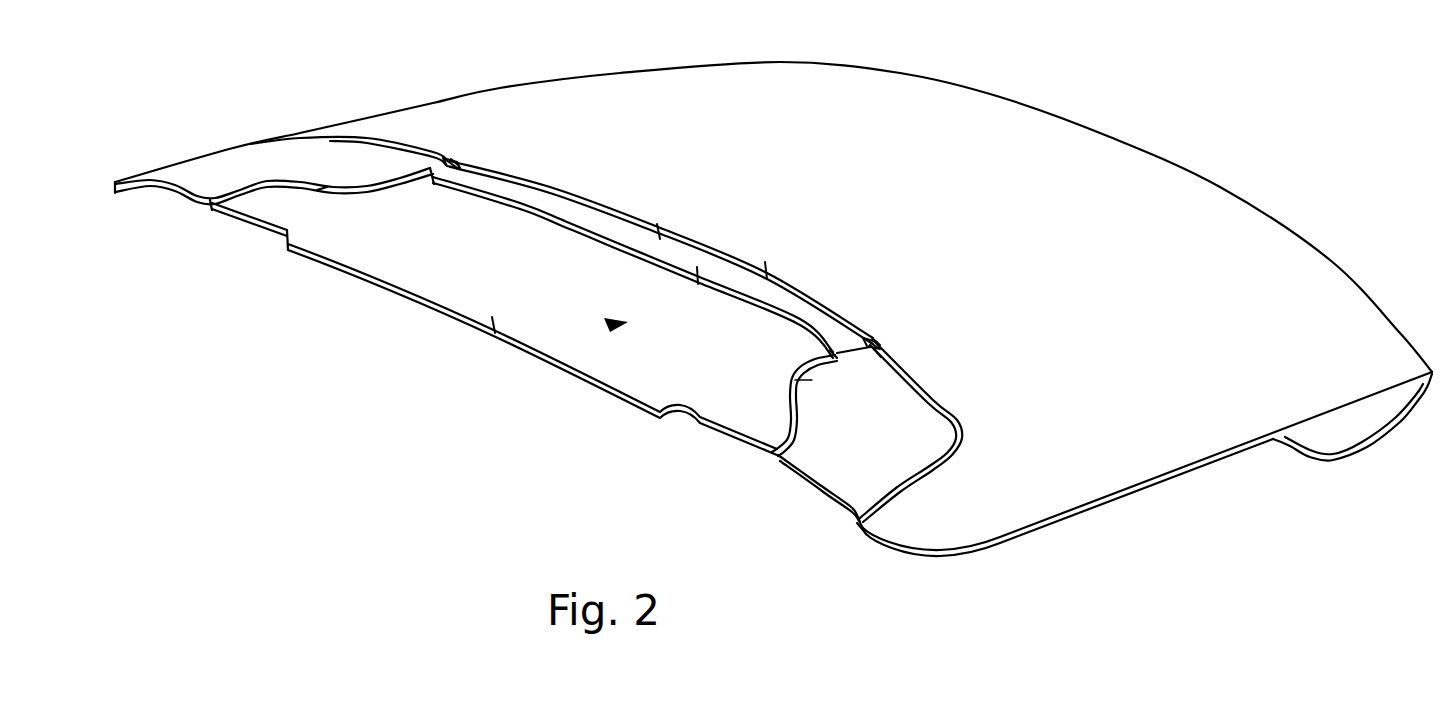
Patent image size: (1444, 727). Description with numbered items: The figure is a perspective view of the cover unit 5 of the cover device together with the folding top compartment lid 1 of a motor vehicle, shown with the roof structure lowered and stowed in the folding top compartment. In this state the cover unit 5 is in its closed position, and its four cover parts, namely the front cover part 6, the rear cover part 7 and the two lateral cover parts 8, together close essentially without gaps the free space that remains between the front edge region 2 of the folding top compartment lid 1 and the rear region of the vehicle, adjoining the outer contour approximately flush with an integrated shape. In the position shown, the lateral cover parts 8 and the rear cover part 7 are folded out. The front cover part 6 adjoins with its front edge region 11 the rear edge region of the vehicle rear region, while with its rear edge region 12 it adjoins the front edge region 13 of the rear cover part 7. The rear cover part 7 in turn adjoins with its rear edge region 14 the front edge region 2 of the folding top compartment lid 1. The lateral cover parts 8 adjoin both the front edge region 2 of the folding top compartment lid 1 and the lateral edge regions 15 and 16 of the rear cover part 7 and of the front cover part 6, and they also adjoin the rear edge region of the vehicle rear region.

The folding top compartment lid 1 is at (1023, 137).
The front edge region of the folding top compartment lid 2 is at (653, 234).
The cover unit 5 is at (610, 325).
The front cover part 6 is at (480, 295).
The rear cover part 7 is at (547, 200).
The lateral cover parts 8 is at (237, 163).
The front edge region of the front cover part 11 is at (493, 320).
The rear edge region of the front cover part 12 is at (697, 277).
The front edge region of the rear cover part 13 is at (565, 215).
The rear edge region of the rear cover part 14 is at (767, 273).
The lateral edge region of the rear cover part 15 is at (450, 163).
The lateral edge region of the front cover part 16 is at (318, 193).